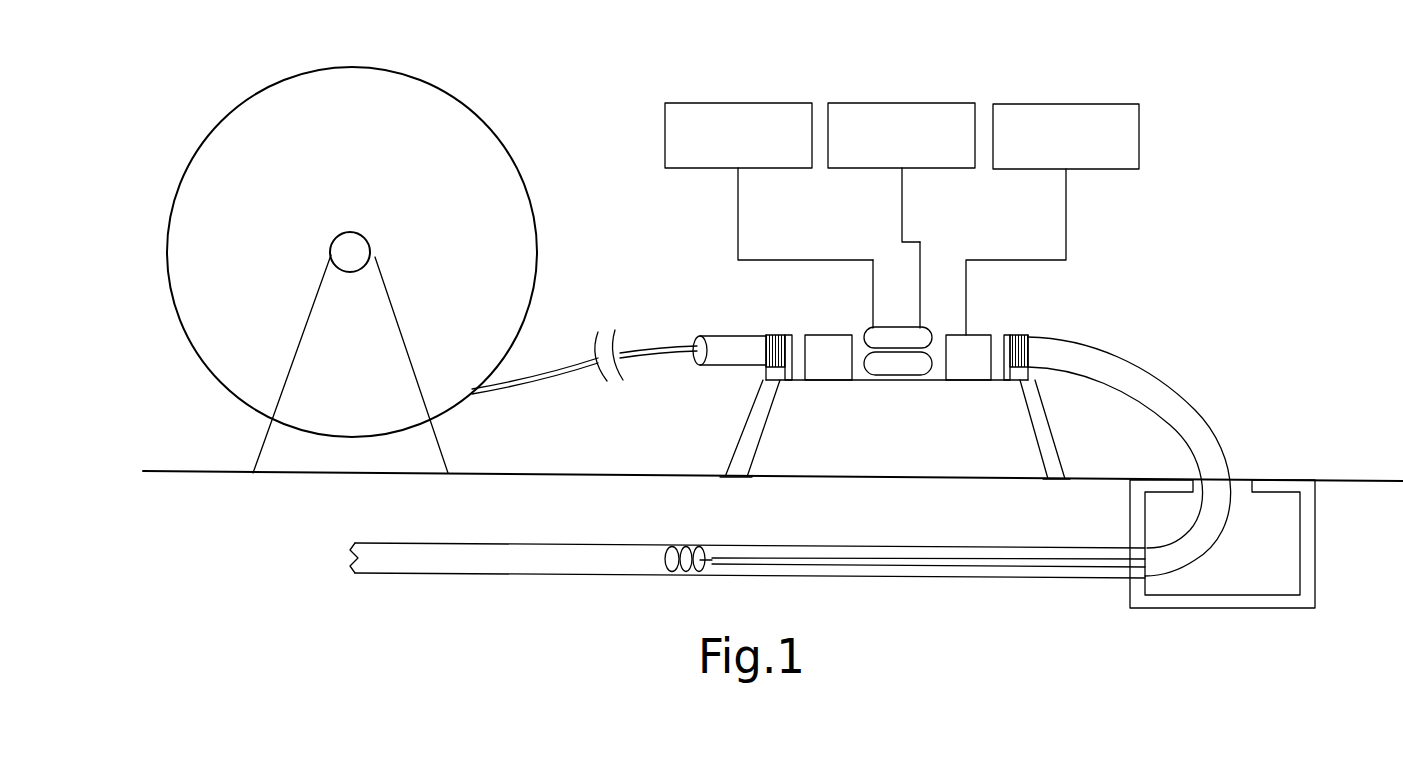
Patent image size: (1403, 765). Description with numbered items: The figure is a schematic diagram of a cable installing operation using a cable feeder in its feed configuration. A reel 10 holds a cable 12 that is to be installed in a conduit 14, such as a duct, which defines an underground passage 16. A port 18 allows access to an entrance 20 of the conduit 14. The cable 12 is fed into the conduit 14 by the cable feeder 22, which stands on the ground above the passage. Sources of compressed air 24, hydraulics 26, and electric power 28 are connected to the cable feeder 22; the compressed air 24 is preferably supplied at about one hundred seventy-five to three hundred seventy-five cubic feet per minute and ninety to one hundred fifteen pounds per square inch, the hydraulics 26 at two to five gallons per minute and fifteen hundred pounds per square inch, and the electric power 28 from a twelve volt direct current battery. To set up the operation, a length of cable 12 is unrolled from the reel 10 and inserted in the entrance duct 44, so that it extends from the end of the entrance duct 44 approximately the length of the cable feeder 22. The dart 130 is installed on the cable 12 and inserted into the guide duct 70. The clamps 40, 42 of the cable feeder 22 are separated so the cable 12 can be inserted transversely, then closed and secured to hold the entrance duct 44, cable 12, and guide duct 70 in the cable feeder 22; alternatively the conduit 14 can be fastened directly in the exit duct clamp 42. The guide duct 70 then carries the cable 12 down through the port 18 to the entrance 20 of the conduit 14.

The reel 10 is at (422, 80).
The cable 12 is at (523, 385).
The conduit 14 is at (967, 578).
The underground passage 16 is at (890, 552).
The port 18 is at (1268, 518).
The entrance 20 is at (1152, 581).
The cable feeder 22 is at (716, 263).
The compressed air 24 is at (1140, 140).
The hydraulics 26 is at (937, 103).
The electric power 28 is at (765, 103).
The clamp 40 is at (785, 335).
The exit duct clamp 42 is at (1015, 335).
The entrance duct 44 is at (730, 345).
The guide duct 70 is at (1100, 367).
The dart 130 is at (665, 547).